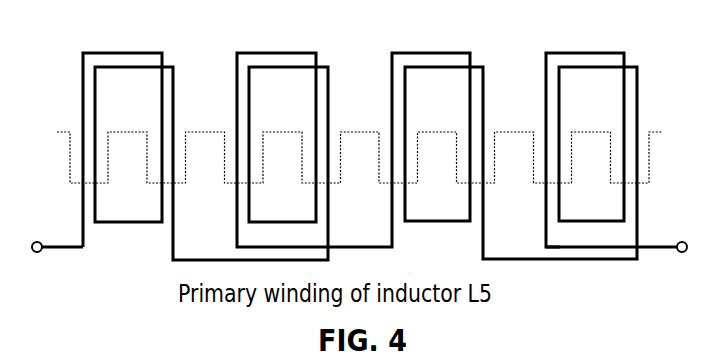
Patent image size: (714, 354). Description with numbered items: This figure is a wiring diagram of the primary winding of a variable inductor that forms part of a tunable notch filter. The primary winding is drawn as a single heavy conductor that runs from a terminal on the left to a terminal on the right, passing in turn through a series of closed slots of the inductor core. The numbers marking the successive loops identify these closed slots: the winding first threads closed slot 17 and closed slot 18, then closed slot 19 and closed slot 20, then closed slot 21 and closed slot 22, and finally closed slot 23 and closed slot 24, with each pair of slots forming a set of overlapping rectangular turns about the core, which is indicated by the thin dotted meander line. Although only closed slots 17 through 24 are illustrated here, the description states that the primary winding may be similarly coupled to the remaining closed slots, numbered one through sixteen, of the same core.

The closed slot 17 is at (118, 131).
The closed slot 18 is at (172, 137).
The closed slot 19 is at (270, 131).
The closed slot 20 is at (290, 137).
The closed slot 21 is at (392, 131).
The closed slot 22 is at (482, 137).
The closed slot 23 is at (579, 131).
The closed slot 24 is at (599, 137).